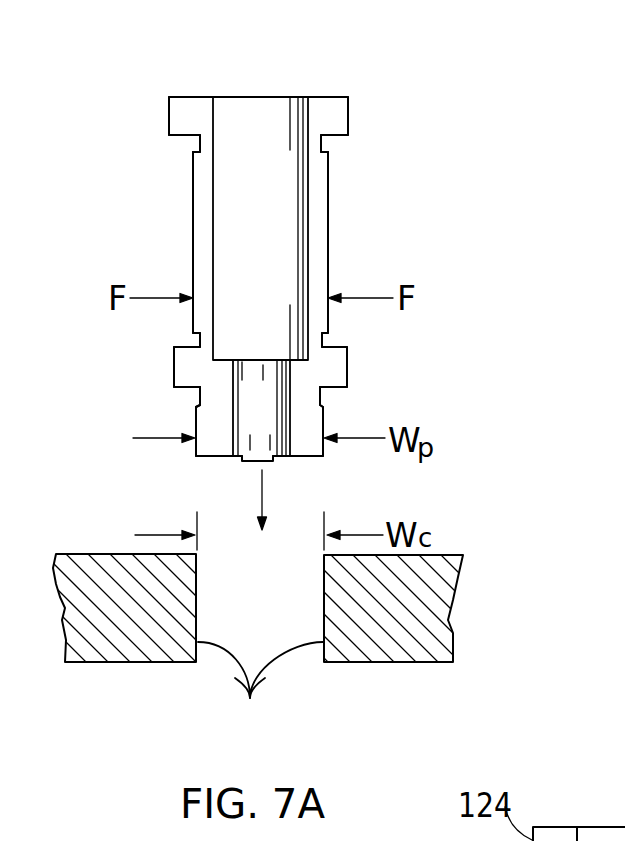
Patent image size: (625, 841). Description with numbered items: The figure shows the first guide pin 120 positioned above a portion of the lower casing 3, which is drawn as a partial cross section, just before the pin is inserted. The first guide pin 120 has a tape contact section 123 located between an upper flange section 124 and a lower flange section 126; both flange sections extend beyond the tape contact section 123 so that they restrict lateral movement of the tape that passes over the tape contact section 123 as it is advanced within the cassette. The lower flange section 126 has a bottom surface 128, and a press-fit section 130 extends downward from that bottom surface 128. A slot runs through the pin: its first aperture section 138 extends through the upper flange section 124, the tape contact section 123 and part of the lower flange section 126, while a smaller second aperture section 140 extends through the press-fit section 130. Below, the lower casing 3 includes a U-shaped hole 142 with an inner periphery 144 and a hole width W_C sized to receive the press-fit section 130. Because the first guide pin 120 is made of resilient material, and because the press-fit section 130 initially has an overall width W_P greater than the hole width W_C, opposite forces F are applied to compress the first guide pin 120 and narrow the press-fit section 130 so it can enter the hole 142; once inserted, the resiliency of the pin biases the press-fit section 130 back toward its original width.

The first guide pin 120 is at (293, 68).
The upper flange section 124 is at (177, 117).
The tape contact section 123 is at (197, 273).
The first aperture section 138 is at (240, 222).
The lower flange section 126 is at (186, 368).
The bottom surface 128 is at (177, 387).
The press-fit section 130 is at (313, 413).
The second aperture section 140 is at (259, 390).
The lower casing 3 is at (417, 643).
The U-shaped hole 142 is at (297, 662).
The inner periphery 144 is at (239, 705).